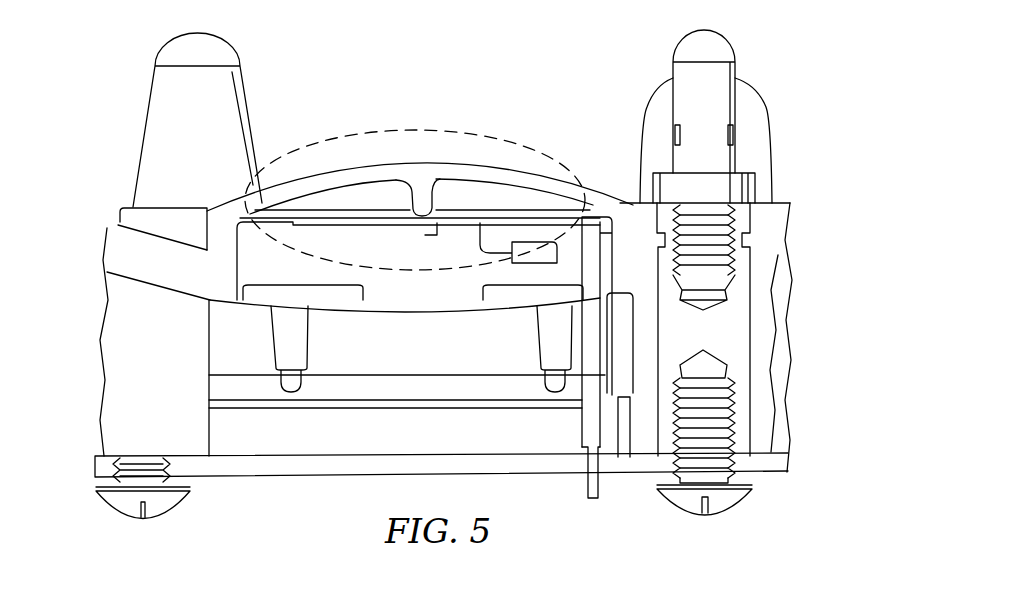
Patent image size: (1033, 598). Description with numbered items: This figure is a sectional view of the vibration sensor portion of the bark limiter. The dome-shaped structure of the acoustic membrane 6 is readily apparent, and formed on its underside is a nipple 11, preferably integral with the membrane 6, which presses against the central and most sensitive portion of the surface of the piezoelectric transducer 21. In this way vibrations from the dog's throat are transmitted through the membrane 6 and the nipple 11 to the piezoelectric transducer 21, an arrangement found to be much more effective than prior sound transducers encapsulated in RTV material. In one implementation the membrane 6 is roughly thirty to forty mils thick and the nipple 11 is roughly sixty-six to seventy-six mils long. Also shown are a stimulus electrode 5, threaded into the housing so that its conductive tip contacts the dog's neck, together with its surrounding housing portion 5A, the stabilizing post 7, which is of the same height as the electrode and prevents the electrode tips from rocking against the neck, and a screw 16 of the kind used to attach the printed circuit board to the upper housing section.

The stimulus electrode 5 is at (736, 48).
The pin housing 5A is at (766, 113).
The acoustic membrane 6 is at (487, 175).
The stabilizing post 7 is at (145, 137).
The nipple 11 is at (413, 200).
The screw 16 is at (733, 508).
The piezoelectric transducer 21 is at (432, 222).